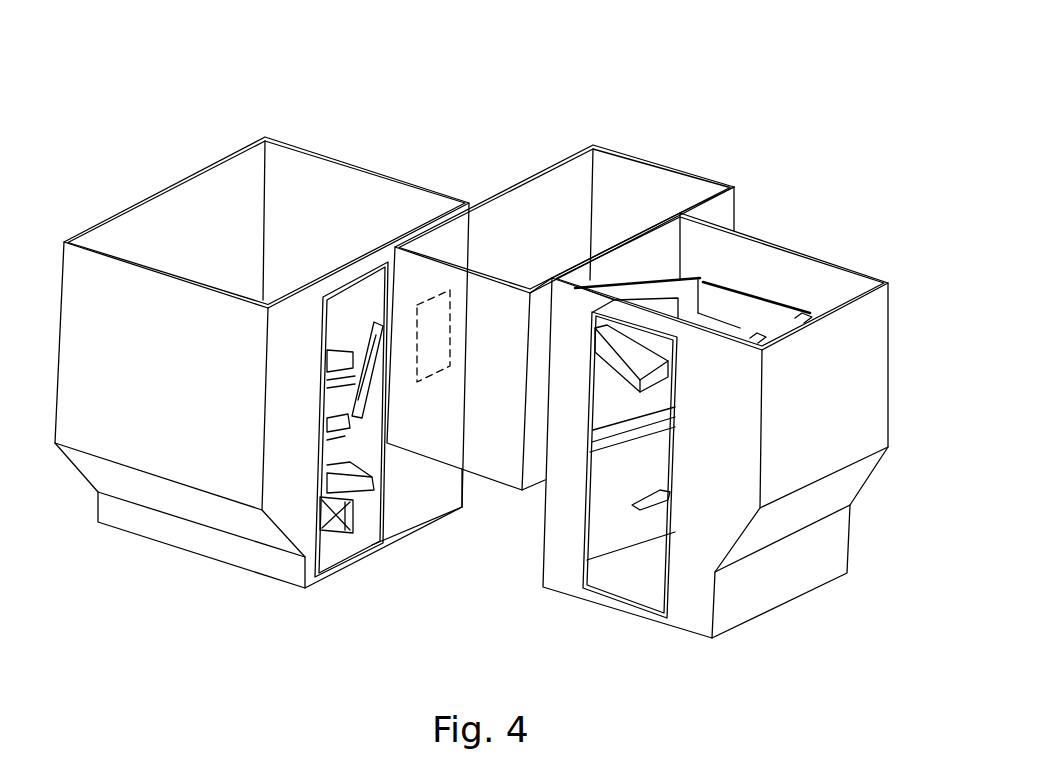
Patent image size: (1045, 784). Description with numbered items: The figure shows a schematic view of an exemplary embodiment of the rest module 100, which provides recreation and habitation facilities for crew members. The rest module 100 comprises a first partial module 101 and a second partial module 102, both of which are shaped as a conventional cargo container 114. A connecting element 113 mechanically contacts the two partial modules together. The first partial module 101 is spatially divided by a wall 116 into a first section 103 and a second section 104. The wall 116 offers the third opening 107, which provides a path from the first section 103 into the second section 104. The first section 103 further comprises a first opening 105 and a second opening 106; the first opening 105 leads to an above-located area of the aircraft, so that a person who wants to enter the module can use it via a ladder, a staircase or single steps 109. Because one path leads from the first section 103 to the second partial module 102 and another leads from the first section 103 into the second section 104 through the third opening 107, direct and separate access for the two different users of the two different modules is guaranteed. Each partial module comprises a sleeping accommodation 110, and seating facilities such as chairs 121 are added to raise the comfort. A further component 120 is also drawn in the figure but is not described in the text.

The rest module 100 is at (124, 142).
The first partial module 101 is at (885, 337).
The second partial module 102 is at (208, 187).
The first section 103 is at (808, 302).
The second section 104 is at (712, 247).
The first opening 105 is at (747, 317).
The second opening 106 is at (612, 600).
The third opening 107 is at (652, 308).
The single steps 109 is at (843, 265).
The sleeping accommodation 110 is at (622, 357).
The connecting element 113 is at (430, 312).
The conventional cargo container 114 is at (178, 470).
The wall 116 is at (723, 310).
The carrier 120 is at (357, 465).
The chairs 121 is at (343, 540).